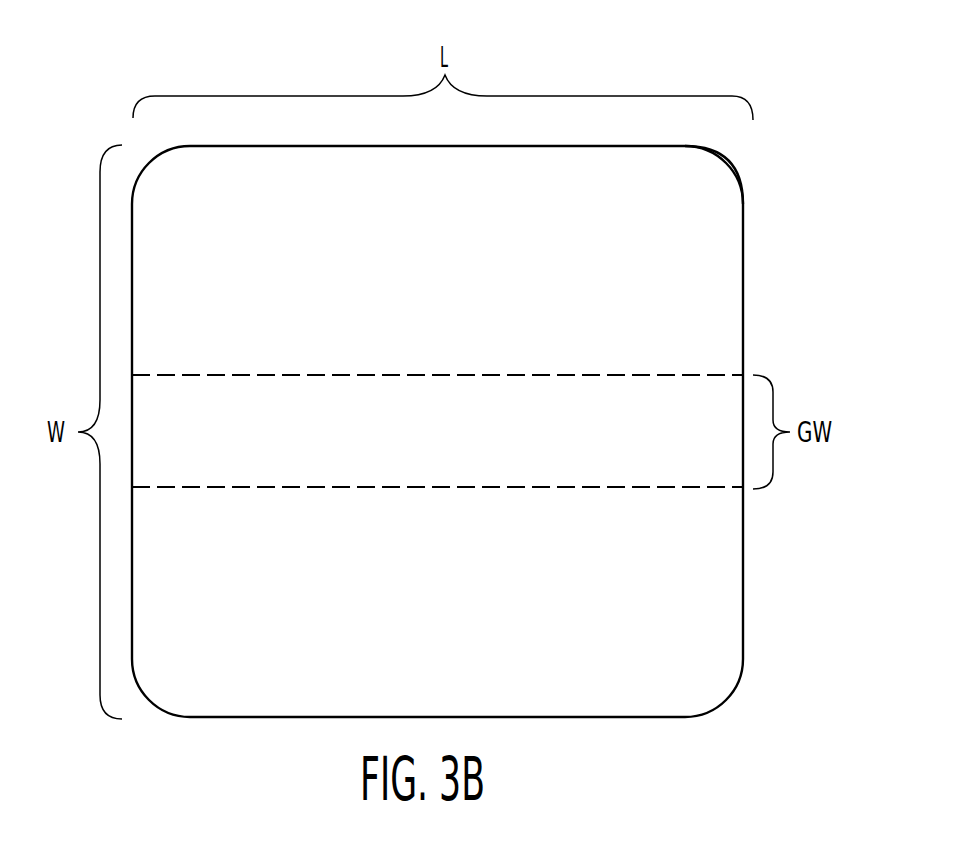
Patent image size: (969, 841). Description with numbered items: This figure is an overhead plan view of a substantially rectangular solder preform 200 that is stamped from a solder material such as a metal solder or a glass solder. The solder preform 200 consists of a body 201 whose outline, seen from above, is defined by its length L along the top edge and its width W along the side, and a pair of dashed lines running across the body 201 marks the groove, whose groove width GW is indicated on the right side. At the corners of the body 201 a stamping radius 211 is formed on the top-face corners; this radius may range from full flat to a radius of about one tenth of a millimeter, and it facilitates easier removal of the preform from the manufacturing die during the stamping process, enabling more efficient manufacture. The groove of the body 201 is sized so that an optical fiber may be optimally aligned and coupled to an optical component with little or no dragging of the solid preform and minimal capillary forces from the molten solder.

The solder preform 200 is at (800, 52).
The body 201 is at (746, 594).
The stamping radius 211 is at (718, 158).